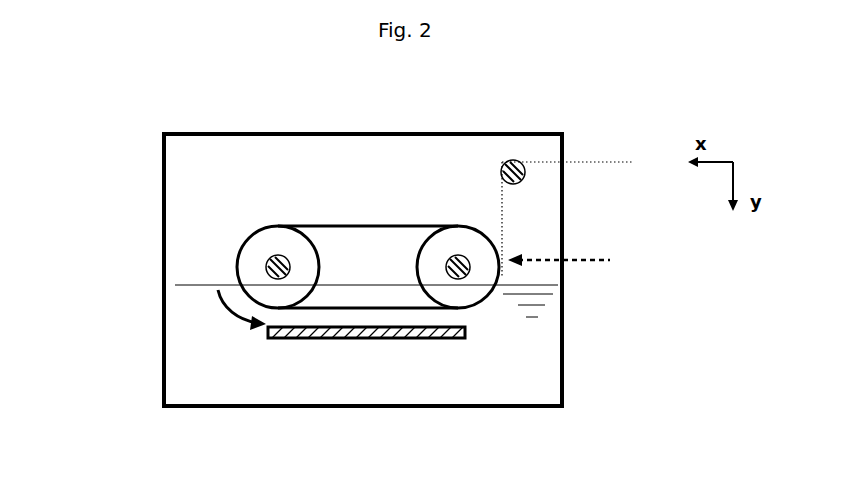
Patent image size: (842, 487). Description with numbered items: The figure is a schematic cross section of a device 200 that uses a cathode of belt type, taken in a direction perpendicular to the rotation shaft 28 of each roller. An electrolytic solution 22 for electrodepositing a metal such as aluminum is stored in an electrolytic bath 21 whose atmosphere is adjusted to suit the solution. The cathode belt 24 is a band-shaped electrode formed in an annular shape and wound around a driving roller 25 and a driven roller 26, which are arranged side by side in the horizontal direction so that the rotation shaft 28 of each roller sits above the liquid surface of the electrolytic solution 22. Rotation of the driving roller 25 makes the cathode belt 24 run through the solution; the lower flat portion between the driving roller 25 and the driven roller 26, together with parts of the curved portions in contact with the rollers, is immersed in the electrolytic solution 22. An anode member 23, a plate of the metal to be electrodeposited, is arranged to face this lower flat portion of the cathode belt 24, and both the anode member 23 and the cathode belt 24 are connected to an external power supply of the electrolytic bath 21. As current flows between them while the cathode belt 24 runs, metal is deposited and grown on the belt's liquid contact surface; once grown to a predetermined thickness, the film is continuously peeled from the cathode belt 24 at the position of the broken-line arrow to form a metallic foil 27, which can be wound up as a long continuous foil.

The device 200 is at (70, 116).
The electrolytic bath 21 is at (358, 132).
The electrolytic solution 22 is at (383, 310).
The anode member 23 is at (325, 340).
The cathode belt 24 is at (410, 308).
The driving roller 25 is at (255, 228).
The driven roller 26 is at (482, 303).
The metallic foil 27 is at (530, 162).
The rotation shaft 28 is at (264, 262).